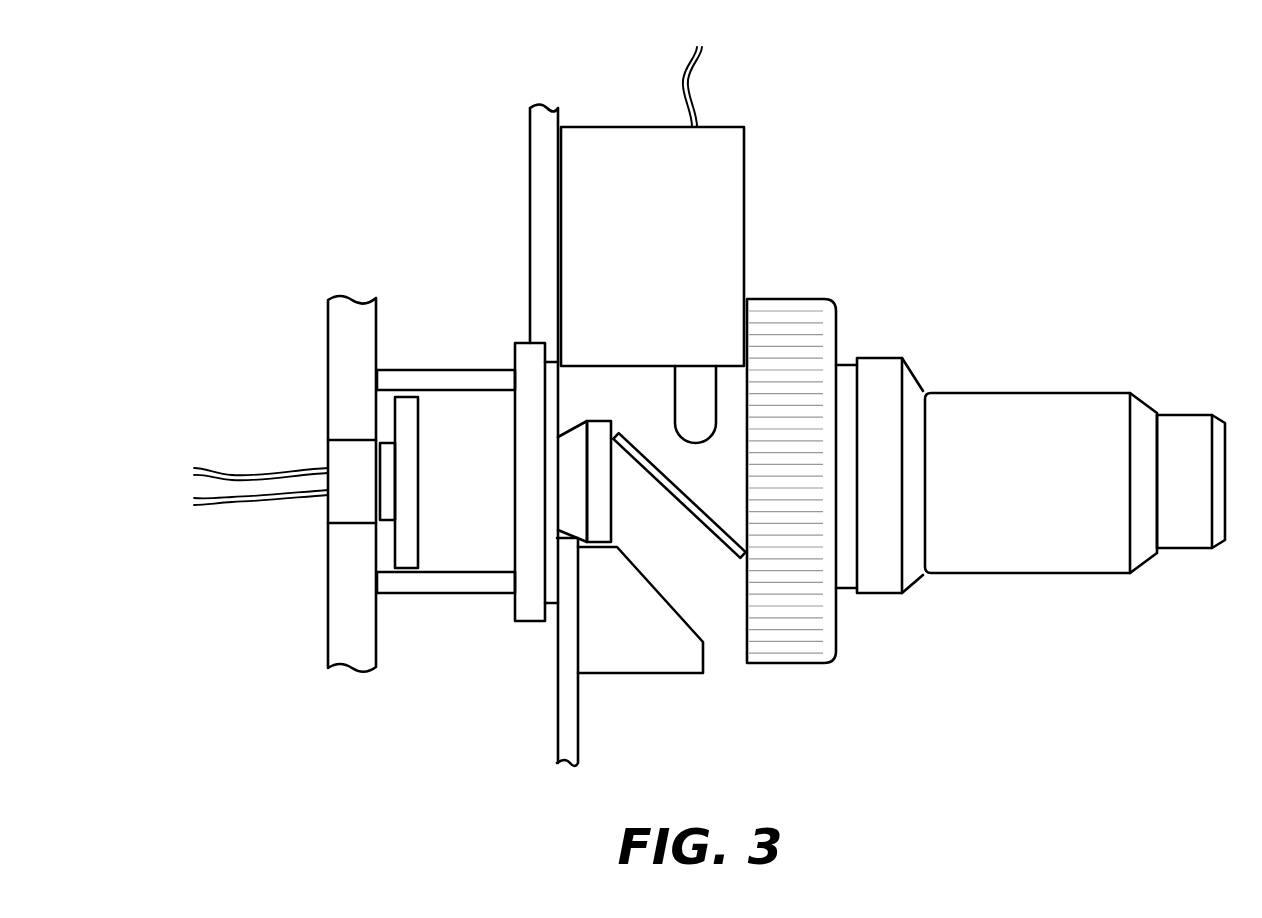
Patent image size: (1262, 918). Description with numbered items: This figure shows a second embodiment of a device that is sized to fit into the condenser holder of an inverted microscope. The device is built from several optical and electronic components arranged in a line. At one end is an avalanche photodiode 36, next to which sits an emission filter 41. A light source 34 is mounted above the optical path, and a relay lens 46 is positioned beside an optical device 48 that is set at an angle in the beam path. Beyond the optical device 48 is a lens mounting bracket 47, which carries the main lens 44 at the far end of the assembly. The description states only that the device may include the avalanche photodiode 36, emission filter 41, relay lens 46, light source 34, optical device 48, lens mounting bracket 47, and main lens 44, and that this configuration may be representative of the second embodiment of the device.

The light source 34 is at (685, 425).
The avalanche photodiode 36 is at (350, 457).
The emission filter 41 is at (410, 429).
The main lens 44 is at (1044, 524).
The relay lens 46 is at (597, 522).
The lens mounting bracket 47 is at (835, 660).
The optical device 48 is at (716, 532).